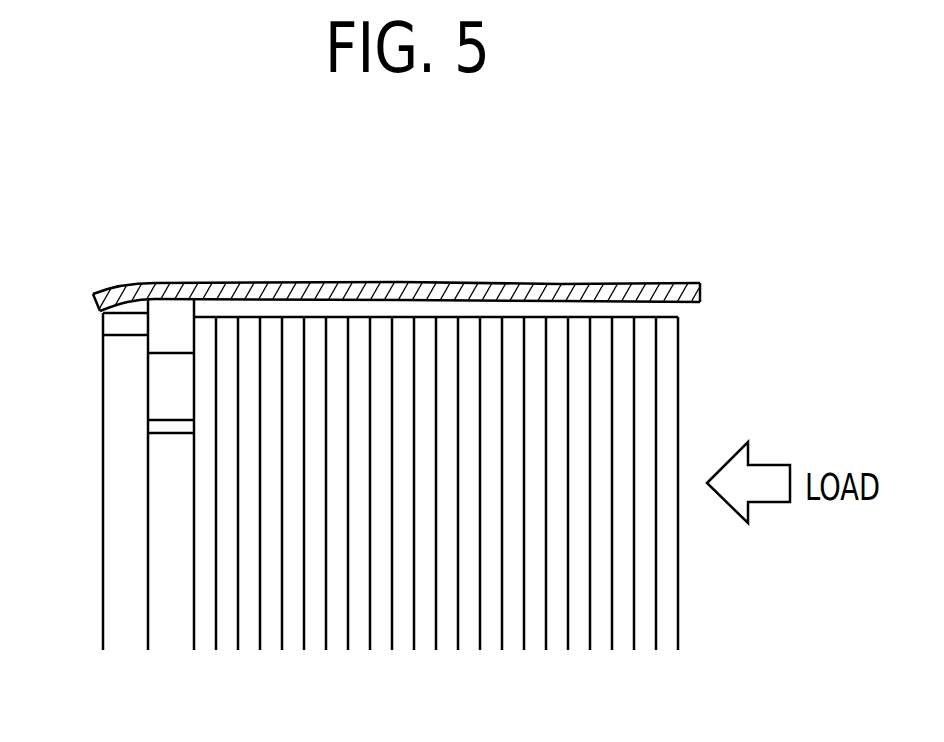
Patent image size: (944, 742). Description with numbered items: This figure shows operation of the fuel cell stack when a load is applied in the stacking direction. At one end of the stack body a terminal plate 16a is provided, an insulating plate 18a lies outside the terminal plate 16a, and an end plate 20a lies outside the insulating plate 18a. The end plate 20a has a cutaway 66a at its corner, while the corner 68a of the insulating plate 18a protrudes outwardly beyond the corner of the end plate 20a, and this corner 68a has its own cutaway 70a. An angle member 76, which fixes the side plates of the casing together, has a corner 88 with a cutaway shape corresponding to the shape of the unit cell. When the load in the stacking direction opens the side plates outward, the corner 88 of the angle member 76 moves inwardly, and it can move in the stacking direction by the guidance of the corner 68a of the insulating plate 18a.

The terminal plate 16a is at (205, 522).
The insulating plate 18a is at (163, 475).
The end plate 20a is at (112, 368).
The cutaway 66a is at (127, 327).
The corner 68a is at (160, 400).
The cutaway 70a is at (178, 318).
The angle member 76 is at (375, 268).
The corner 88 is at (278, 293).